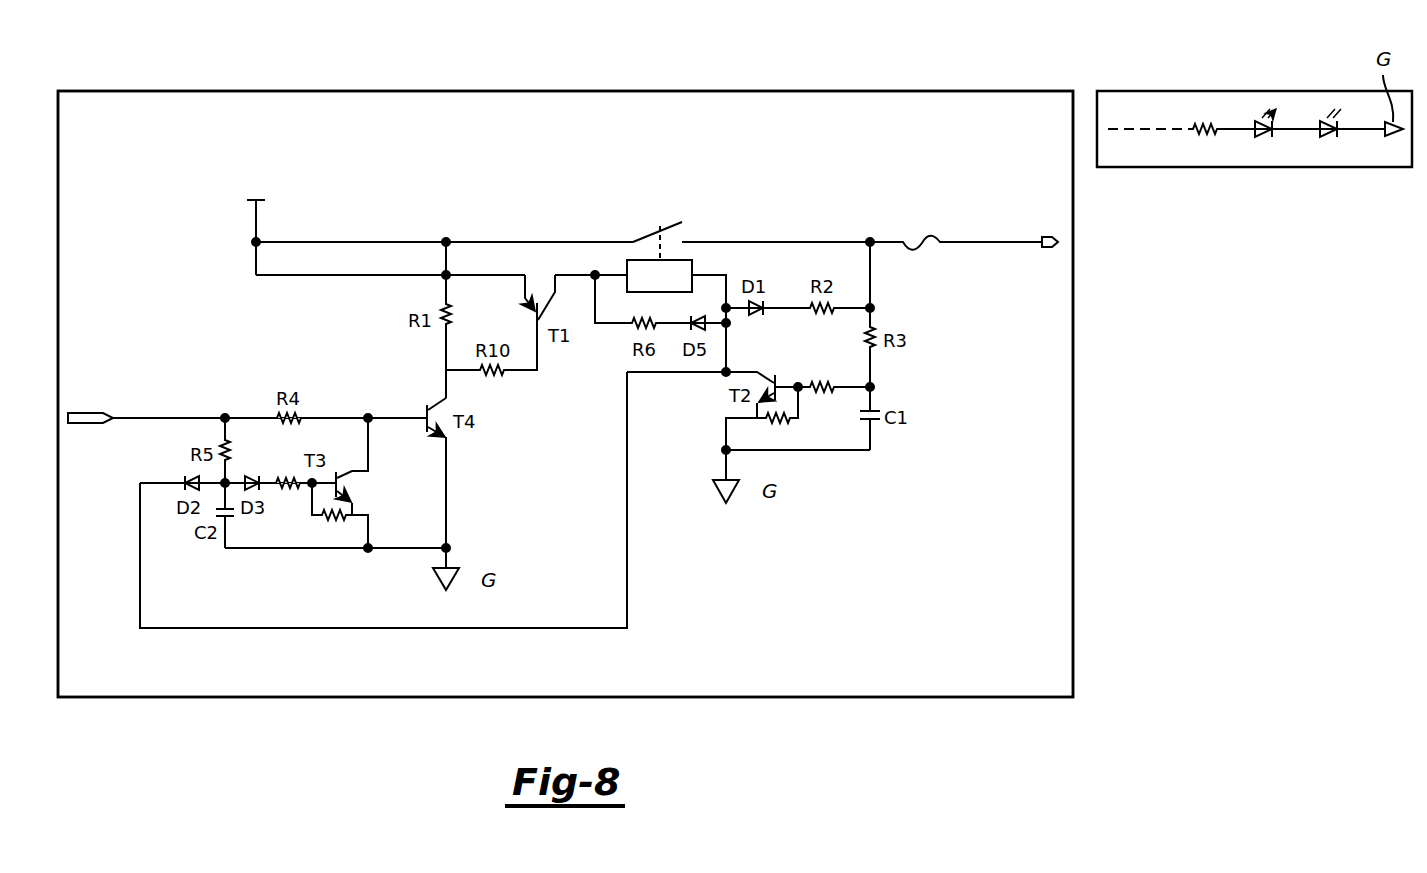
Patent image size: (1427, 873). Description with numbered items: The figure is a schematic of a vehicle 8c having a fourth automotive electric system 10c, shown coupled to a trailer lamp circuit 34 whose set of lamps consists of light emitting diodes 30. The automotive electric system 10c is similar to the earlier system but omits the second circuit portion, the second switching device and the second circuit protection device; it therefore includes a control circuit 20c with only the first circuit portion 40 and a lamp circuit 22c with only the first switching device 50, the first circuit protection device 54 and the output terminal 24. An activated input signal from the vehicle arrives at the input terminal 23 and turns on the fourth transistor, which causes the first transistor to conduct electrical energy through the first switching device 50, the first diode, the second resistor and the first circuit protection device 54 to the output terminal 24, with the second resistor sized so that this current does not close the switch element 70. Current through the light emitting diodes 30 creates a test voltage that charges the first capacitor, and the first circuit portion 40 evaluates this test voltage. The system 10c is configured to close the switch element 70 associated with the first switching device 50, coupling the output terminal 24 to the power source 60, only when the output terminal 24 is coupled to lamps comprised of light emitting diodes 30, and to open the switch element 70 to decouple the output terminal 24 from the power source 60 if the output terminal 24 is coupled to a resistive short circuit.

The vehicle 8c is at (766, 80).
The automotive electric system 10c is at (117, 661).
The control circuit 20c is at (650, 607).
The lamp circuit 22c is at (325, 252).
The input terminal 23 is at (80, 410).
The output terminal 24 is at (1045, 236).
The light emitting diode 30 is at (1253, 125).
The first trailer lamp circuit 34 is at (1137, 91).
The first circuit portion 40 is at (655, 572).
The first switching device 50 is at (692, 268).
The first circuit protection device 54 is at (932, 238).
The power source 60 is at (258, 168).
The switch element 70 is at (669, 222).